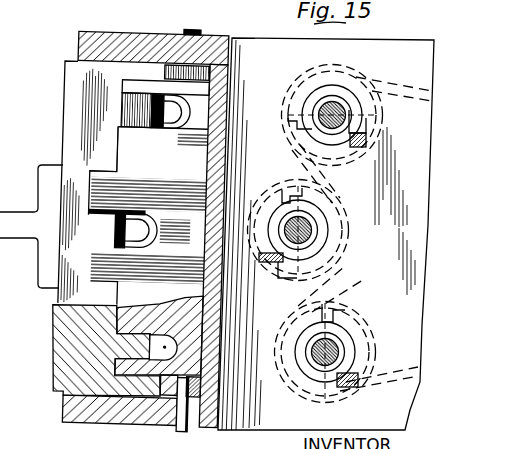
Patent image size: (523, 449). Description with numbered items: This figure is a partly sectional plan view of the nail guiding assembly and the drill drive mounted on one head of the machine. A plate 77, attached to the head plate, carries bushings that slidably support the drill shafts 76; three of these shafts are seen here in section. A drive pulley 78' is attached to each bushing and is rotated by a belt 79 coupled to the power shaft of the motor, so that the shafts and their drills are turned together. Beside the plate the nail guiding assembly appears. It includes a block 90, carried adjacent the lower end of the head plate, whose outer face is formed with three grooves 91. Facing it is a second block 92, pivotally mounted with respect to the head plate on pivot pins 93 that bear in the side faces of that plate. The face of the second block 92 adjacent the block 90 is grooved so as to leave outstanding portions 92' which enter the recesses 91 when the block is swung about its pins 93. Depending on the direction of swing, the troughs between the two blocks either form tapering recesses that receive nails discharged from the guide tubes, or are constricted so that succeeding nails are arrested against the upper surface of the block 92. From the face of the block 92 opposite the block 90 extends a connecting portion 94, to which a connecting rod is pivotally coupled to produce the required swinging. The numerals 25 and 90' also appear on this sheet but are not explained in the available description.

The frame 25 is at (31, 0).
The shaft 76 is at (345, 110).
The plate 77 is at (392, 46).
The drive pulley 78' is at (345, 223).
The belt 79 is at (413, 90).
The block 90 is at (124, 149).
The base plate 90' is at (119, 422).
The groove 91 is at (175, 124).
The second block 92 is at (124, 229).
The outstanding portion 92' is at (110, 318).
The pivot pin 93 is at (193, 28).
The connecting portion 94 is at (13, 212).